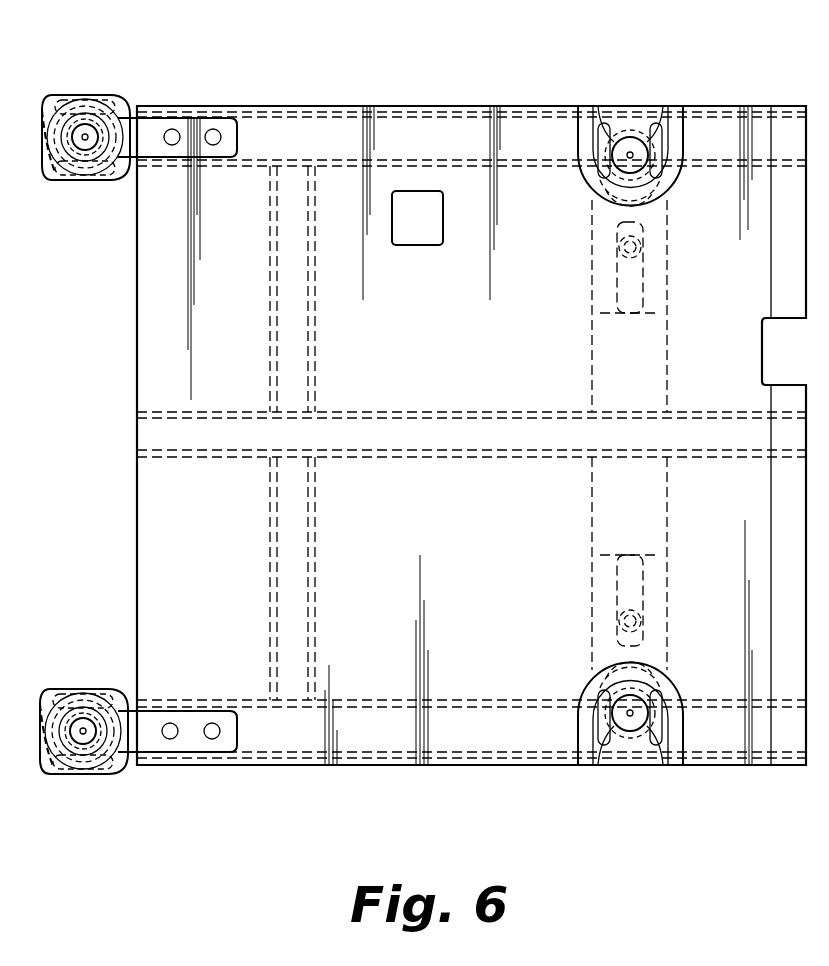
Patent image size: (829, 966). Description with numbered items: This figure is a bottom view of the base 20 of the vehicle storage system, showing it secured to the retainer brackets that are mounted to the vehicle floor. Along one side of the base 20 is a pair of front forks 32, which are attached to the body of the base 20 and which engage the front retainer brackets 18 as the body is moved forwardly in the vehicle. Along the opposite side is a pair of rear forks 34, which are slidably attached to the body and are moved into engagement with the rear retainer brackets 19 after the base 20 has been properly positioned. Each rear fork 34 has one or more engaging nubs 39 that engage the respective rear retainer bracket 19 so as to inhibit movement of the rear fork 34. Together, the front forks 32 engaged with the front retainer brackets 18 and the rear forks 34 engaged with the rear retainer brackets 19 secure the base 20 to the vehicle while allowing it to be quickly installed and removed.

The front retainer bracket 18 is at (45, 150).
The rear retainer bracket 19 is at (615, 122).
The base 20 is at (445, 105).
The front fork 32 is at (62, 95).
The rear fork 34 is at (680, 118).
The engaging nub 39 is at (635, 135).